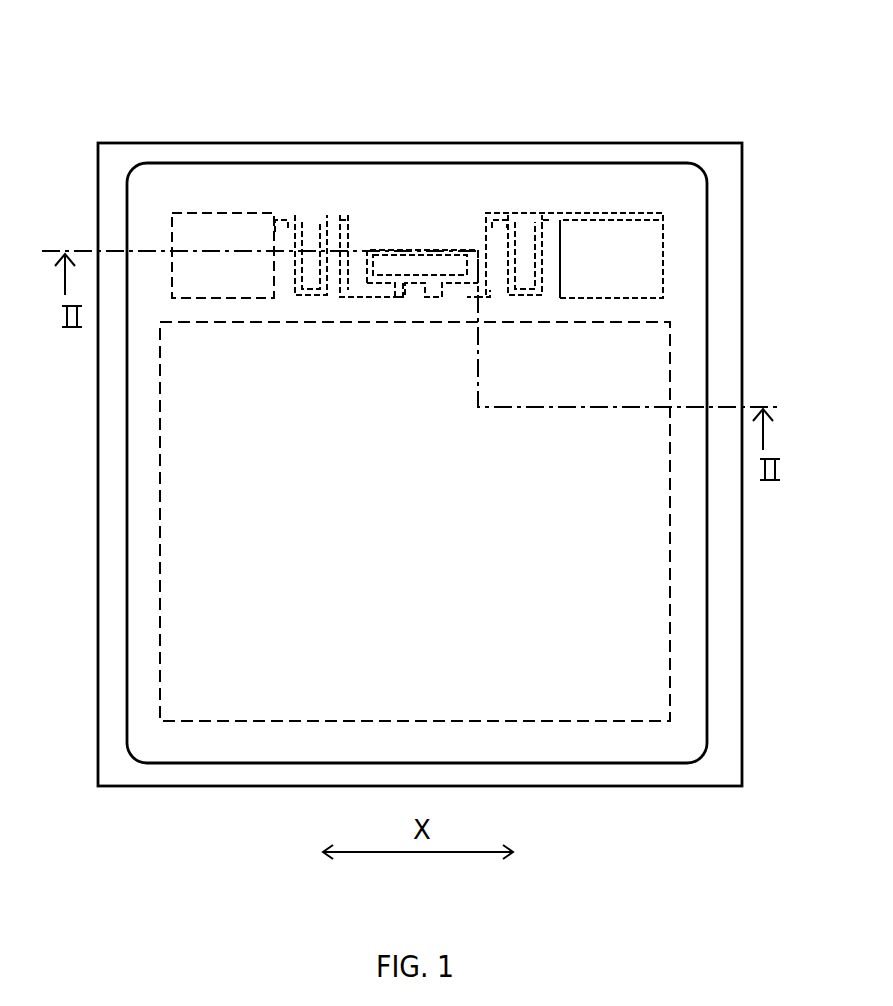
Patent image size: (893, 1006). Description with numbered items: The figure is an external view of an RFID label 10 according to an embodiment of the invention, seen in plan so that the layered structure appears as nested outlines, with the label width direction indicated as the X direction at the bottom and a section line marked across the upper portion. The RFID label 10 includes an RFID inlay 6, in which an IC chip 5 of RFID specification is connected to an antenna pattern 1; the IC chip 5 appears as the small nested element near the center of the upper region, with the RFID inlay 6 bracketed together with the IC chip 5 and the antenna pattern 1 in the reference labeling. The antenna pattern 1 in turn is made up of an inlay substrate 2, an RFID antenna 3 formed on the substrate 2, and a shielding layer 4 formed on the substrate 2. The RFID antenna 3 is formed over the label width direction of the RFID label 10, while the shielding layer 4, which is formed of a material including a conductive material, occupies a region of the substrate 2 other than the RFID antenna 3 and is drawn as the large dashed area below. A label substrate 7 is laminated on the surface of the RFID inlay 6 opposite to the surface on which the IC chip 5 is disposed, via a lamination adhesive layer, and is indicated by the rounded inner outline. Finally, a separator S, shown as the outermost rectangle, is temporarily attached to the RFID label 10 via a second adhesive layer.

The separator S is at (187, 143).
The RFID label 10 is at (388, 104).
The label substrate 7 is at (263, 177).
The RFID inlay 6 is at (668, 68).
The IC chip 5 is at (412, 248).
The antenna pattern 1 is at (606, 108).
The inlay substrate 2 is at (592, 187).
The RFID antenna 3 is at (620, 212).
The shielding layer 4 is at (673, 367).